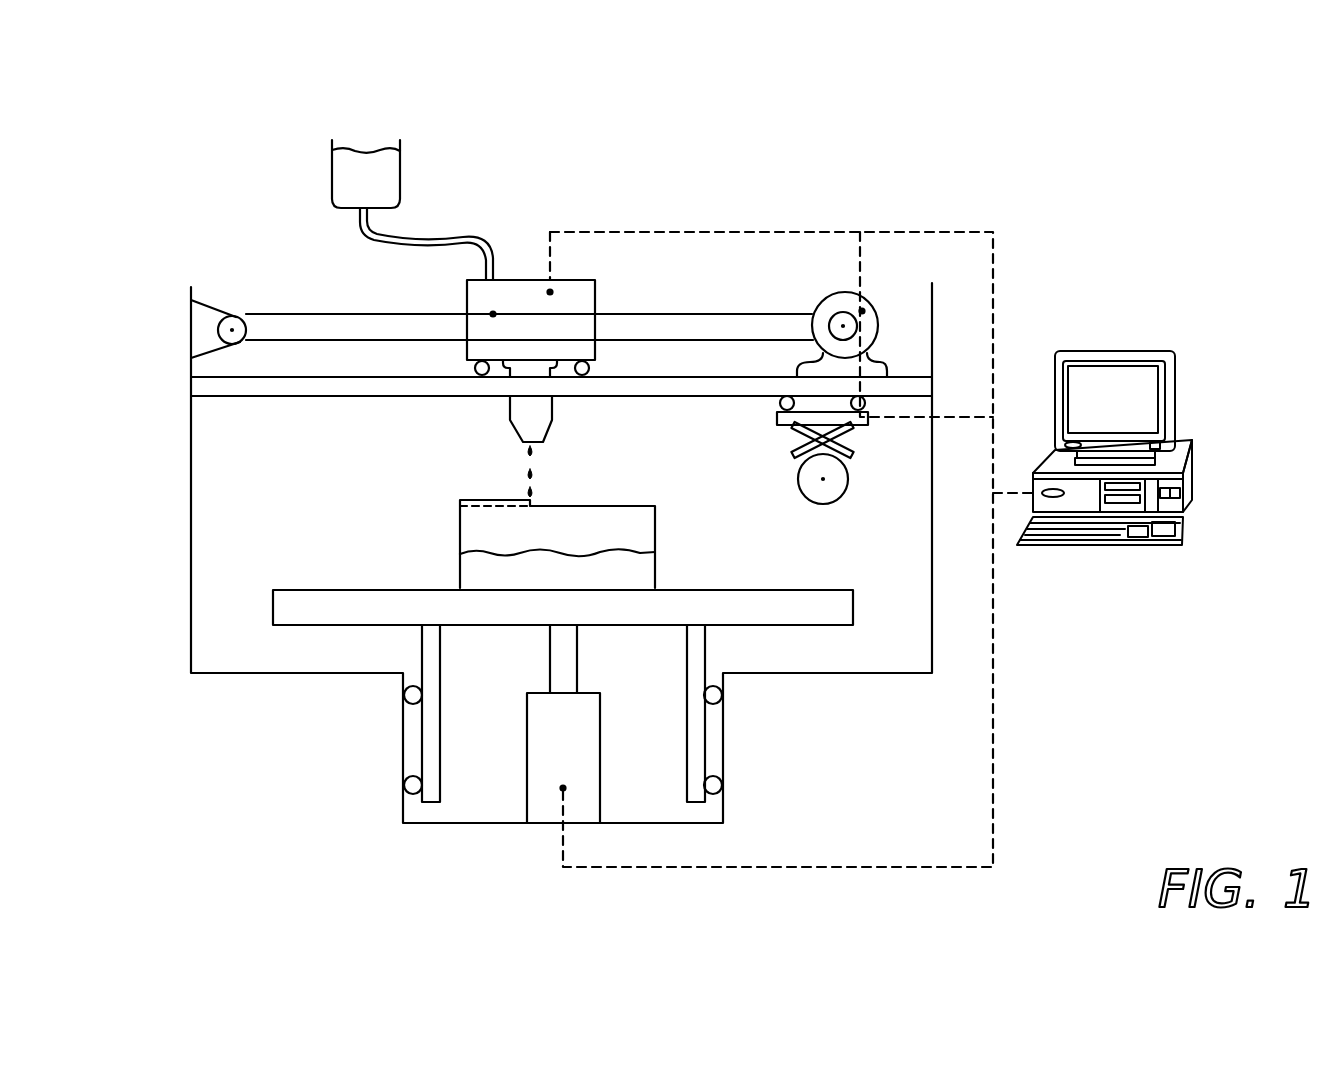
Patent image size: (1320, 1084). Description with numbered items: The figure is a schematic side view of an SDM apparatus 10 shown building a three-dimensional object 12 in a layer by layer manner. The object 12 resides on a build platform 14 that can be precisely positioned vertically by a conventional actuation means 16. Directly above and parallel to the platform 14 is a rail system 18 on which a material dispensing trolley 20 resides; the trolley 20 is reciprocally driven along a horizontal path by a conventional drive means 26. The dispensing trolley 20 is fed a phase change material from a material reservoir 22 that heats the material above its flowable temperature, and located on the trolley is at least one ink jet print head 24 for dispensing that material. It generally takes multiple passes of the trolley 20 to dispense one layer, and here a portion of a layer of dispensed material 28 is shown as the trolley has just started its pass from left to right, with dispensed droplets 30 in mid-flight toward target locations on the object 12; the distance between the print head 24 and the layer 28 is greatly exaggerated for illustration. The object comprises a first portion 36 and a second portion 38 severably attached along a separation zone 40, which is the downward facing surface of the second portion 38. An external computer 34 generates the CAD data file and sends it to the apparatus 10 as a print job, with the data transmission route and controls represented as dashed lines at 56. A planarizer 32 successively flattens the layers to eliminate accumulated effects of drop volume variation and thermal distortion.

The SDM apparatus 10 is at (211, 232).
The three-dimensional object 12 is at (672, 519).
The build platform 14 is at (305, 590).
The actuation means 16 is at (544, 808).
The rail system 18 is at (225, 400).
The material dispensing trolley 20 is at (535, 362).
The material reservoir 22 is at (389, 173).
The ink jet print head 24 is at (510, 402).
The drive means 26 is at (831, 294).
The layer of dispensed material 28 is at (498, 500).
The dispensed droplets 30 is at (537, 452).
The planarizer 32 is at (843, 492).
The external computer 34 is at (1192, 490).
The first portion 36 is at (641, 570).
The second portion 38 is at (478, 525).
The separation zone 40 is at (450, 555).
The data transmission route and controls 56 is at (919, 232).